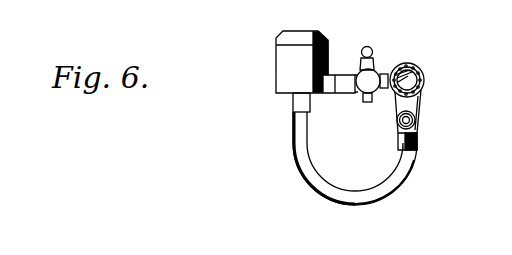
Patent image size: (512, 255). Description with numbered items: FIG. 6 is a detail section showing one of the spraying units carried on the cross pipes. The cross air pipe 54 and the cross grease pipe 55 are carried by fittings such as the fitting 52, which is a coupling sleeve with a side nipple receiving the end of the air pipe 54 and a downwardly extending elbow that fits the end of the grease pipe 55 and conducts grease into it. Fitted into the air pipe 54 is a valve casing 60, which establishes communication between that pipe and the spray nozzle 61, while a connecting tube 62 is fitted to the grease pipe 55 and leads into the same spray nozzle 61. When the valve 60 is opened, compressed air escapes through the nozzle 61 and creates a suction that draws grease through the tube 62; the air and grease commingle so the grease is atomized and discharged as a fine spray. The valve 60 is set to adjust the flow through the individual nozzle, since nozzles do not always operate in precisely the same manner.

The fitting 52 is at (416, 103).
The cross air pipe 54 is at (418, 63).
The cross grease pipe 55 is at (416, 122).
The valve casing 60 is at (376, 72).
The spray nozzle 61 is at (290, 69).
The connecting tube 62 is at (417, 170).